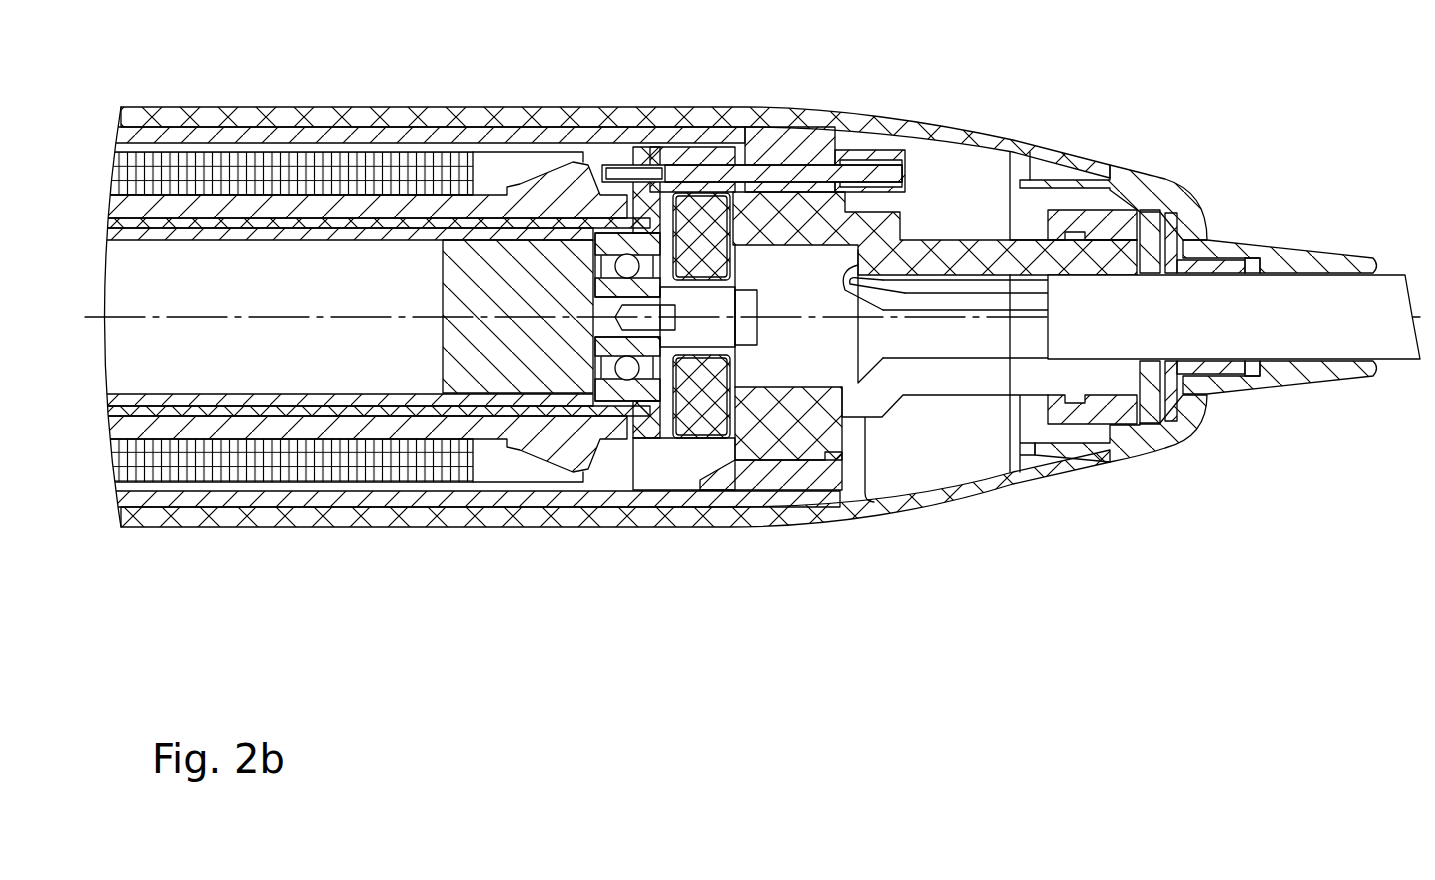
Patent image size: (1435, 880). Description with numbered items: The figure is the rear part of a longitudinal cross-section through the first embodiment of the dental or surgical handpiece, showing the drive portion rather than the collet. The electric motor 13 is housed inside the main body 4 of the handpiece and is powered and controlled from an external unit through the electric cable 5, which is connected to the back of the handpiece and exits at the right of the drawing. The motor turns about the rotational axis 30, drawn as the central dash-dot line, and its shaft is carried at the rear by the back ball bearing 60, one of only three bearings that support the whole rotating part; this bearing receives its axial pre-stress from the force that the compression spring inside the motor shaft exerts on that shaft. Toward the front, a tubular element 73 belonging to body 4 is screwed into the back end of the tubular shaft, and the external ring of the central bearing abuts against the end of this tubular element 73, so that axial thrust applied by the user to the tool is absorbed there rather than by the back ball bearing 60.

The main body 4 is at (277, 103).
The tubular element 73 is at (358, 137).
The back ball bearing 60 is at (582, 237).
The rotational axis 30 is at (218, 315).
The electric motor 13 is at (485, 472).
The electric cable 5 is at (1385, 286).